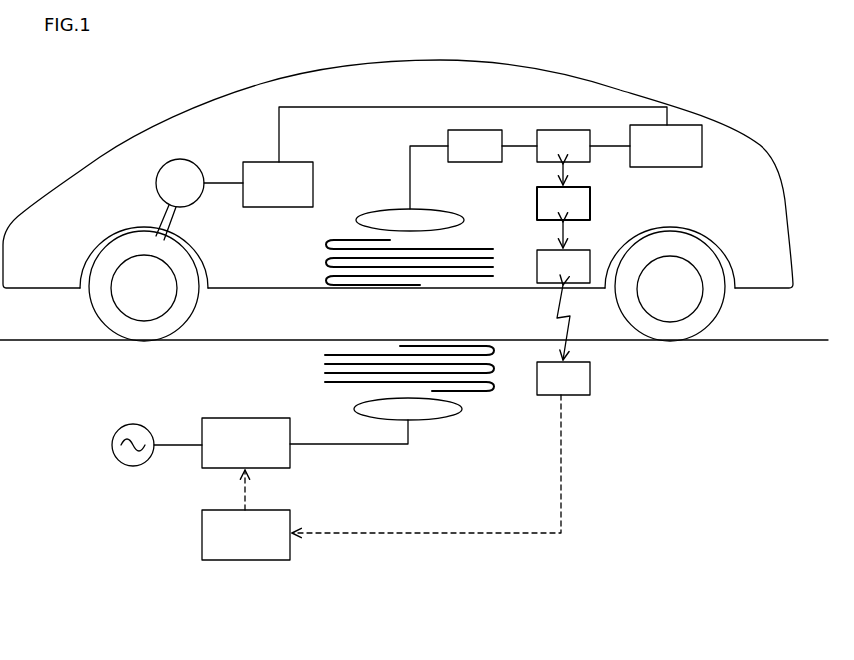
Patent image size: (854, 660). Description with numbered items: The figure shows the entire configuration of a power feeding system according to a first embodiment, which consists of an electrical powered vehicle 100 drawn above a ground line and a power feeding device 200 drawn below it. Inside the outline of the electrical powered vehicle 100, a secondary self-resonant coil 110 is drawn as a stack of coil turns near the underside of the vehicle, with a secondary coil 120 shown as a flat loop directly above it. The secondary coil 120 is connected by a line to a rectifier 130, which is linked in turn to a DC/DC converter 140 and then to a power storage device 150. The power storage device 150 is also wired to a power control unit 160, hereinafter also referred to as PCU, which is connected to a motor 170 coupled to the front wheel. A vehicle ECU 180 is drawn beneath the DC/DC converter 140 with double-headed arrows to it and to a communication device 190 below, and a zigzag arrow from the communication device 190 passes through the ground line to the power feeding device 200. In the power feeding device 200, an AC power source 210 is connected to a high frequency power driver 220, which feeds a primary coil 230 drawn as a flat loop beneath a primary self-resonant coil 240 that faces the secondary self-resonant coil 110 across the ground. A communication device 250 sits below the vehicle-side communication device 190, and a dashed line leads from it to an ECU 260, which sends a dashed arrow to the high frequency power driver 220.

The electrical powered vehicle 100 is at (488, 62).
The secondary self-resonant coil 110 is at (326, 258).
The secondary coil 120 is at (383, 208).
The rectifier 130 is at (473, 163).
The DC/DC converter 140 is at (577, 163).
The power storage device 150 is at (703, 147).
The power control unit 160 is at (256, 162).
The motor 170 is at (155, 185).
The vehicle ECU 180 is at (591, 205).
The communication device 190 is at (578, 251).
The power feeding device 200 is at (390, 570).
The AC power source 210 is at (133, 424).
The high frequency power driver 220 is at (245, 418).
The primary coil 230 is at (436, 421).
The primary self-resonant coil 240 is at (325, 368).
The communication device 250 is at (591, 378).
The ECU 260 is at (202, 533).